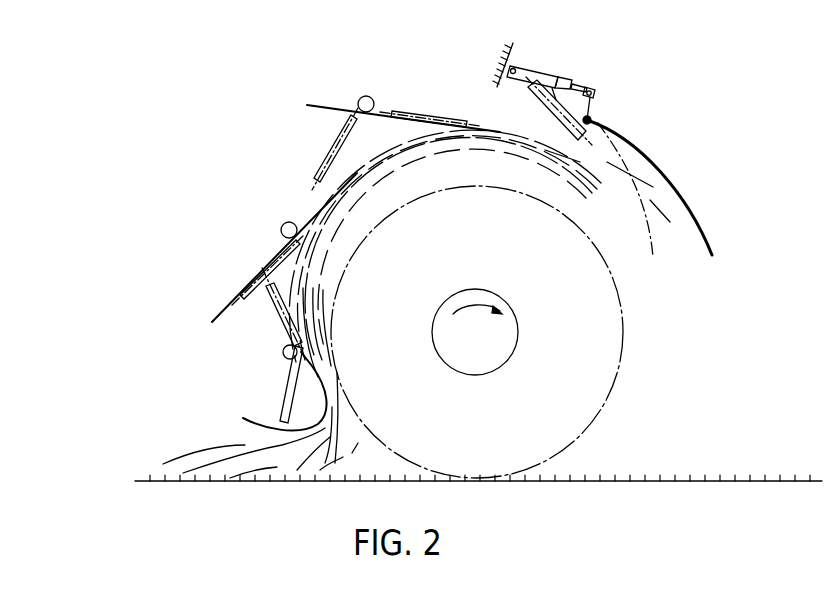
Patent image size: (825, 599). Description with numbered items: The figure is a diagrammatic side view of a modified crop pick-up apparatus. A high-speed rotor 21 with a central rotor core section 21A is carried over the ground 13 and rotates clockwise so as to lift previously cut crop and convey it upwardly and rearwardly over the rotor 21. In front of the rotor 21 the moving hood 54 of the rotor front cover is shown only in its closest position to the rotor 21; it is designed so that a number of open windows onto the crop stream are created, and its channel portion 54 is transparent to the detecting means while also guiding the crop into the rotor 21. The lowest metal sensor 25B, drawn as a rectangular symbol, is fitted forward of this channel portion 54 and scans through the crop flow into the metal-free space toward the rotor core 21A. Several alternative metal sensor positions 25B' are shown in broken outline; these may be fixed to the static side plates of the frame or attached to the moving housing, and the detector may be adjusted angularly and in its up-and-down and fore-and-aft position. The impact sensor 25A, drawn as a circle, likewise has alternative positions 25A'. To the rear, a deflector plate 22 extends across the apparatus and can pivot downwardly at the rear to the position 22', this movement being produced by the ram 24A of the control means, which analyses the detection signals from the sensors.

The ground 13 is at (643, 482).
The high-speed rotor 21 is at (563, 387).
The rotor core section 21A is at (518, 334).
The deflector plate 22 is at (649, 187).
The lowered position of deflector plate 22' is at (649, 210).
The ram 24A is at (543, 67).
The impact sensor 25A is at (255, 366).
The alternative position of impact sensor 25A' is at (313, 153).
The metal sensor 25B is at (265, 384).
The alternative position of metal sensor 25B' is at (407, 206).
The moving hood 54 is at (322, 105).